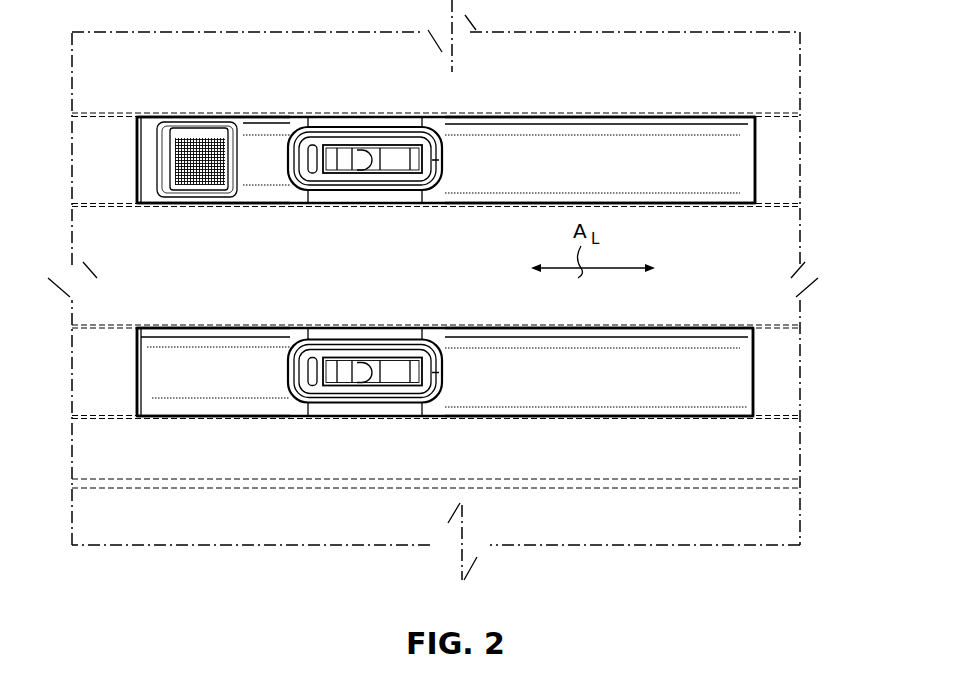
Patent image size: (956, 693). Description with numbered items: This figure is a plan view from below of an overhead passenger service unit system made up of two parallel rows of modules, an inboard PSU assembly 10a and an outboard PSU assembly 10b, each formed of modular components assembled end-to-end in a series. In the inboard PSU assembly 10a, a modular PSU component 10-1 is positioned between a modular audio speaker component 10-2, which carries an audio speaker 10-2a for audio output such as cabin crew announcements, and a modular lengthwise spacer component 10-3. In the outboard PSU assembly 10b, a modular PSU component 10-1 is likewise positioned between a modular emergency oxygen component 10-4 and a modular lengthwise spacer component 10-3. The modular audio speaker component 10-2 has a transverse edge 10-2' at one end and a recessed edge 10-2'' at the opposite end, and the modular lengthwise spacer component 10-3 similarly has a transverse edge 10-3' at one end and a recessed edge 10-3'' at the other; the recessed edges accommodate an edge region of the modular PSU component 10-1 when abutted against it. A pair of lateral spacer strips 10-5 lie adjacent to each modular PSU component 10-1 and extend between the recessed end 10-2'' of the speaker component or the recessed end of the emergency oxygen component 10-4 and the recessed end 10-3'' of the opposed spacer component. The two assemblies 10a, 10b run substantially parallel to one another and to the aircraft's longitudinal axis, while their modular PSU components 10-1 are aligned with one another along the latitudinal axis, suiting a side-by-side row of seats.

The inboard PSU assembly 10a is at (770, 162).
The outboard PSU assembly 10b is at (95, 370).
The modular PSU component 10-1 is at (368, 194).
The modular audio speaker component 10-2 is at (213, 138).
The transverse edge 10-2' is at (111, 294).
The recessed edge 10-2'' is at (297, 256).
The audio speaker 10-2a is at (203, 175).
The modular lengthwise spacer component 10-3 is at (600, 266).
The transverse edge 10-3' is at (740, 292).
The recessed edge 10-3'' is at (444, 215).
The modular emergency oxygen component 10-4 is at (233, 386).
The lateral spacer strips 10-5 is at (362, 118).